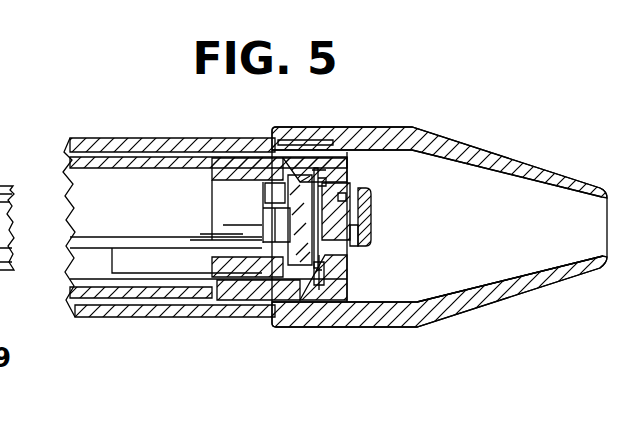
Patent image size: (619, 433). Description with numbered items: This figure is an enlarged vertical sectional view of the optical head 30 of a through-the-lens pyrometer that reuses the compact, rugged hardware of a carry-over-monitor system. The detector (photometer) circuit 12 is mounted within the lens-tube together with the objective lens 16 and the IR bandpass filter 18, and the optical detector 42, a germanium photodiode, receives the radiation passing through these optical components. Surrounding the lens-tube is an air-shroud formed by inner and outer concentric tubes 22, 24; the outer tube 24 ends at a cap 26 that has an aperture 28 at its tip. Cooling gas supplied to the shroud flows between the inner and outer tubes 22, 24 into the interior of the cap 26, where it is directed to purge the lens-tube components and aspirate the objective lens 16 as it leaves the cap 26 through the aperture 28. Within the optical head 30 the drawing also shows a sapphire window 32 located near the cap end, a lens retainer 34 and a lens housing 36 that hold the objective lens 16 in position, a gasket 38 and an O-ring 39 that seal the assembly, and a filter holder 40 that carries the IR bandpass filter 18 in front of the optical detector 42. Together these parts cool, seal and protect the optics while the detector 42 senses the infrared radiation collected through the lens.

The THROUGH-THE-LENS-PYROMETER circuit 12 is at (126, 238).
The objective lens 16 is at (367, 243).
The IR bandpass filter 18 is at (297, 192).
The inner concentric tube 22 is at (90, 292).
The outer concentric tube 24 is at (123, 310).
The cap 26 is at (565, 167).
The aperture 28 is at (556, 238).
The optical head 30 is at (372, 207).
The sapphire window 32 is at (367, 205).
The lens retainer 34 is at (343, 190).
The lens housing 36 is at (348, 270).
The gasket 38 is at (345, 290).
The O-ring 39 is at (290, 298).
The filter holder 40 is at (275, 282).
The optical detector 42 is at (270, 218).